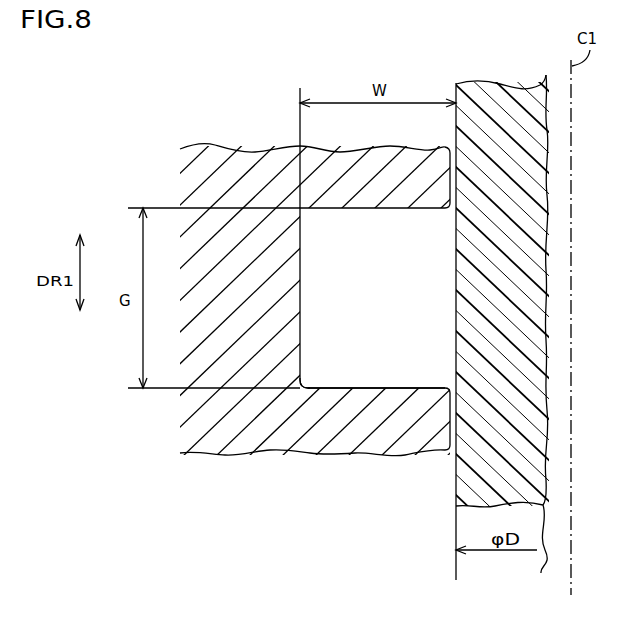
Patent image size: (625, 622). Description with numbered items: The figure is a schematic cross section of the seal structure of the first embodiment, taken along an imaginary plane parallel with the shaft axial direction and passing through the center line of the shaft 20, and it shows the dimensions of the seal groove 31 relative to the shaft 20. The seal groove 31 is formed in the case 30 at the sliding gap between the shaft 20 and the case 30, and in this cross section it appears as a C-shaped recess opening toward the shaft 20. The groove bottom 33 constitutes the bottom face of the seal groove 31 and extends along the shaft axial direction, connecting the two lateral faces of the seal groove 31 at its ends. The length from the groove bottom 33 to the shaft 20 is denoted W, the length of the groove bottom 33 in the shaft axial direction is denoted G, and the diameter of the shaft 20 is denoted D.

The shaft 20 is at (503, 107).
The case 30 is at (420, 435).
The seal groove 31 is at (344, 352).
The groove bottom 33 is at (297, 341).